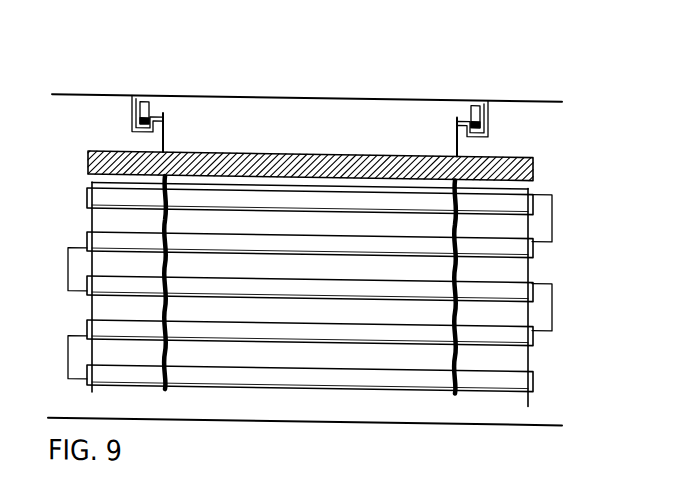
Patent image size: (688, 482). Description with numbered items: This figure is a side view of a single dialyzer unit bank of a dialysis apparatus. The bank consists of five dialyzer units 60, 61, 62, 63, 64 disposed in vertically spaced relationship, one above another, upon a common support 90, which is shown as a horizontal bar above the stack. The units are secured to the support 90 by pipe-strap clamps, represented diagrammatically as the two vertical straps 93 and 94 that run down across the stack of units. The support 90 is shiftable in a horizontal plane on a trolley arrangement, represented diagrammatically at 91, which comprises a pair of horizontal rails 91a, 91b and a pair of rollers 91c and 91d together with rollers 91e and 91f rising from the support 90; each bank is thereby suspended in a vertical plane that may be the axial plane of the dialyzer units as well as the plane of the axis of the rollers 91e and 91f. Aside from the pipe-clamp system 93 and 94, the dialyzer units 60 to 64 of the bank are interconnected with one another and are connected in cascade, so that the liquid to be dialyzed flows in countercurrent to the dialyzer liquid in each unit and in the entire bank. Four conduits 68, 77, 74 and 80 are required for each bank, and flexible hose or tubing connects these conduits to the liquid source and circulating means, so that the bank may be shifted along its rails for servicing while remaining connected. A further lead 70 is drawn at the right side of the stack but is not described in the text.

The dialyzer unit 60 is at (310, 201).
The dialyzer unit 61 is at (310, 245).
The dialyzer unit 62 is at (310, 290).
The dialyzer unit 63 is at (310, 334).
The dialyzer unit 64 is at (310, 379).
The conduit 68 is at (92, 204).
The right side connector blocks 70 is at (553, 290).
The conduit 74 is at (532, 370).
The conduit 77 is at (530, 389).
The conduit 80 is at (92, 182).
The common support 90 is at (300, 150).
The trolley arrangement 91 is at (307, 103).
The horizontal rail 91a is at (489, 125).
The horizontal rail 91b is at (131, 112).
The roller 91c is at (475, 100).
The roller 91d is at (145, 100).
The roller 91e is at (455, 114).
The roller 91f is at (165, 112).
The pipe-strap clamp 93 is at (170, 175).
The pipe-strap clamp 94 is at (453, 177).